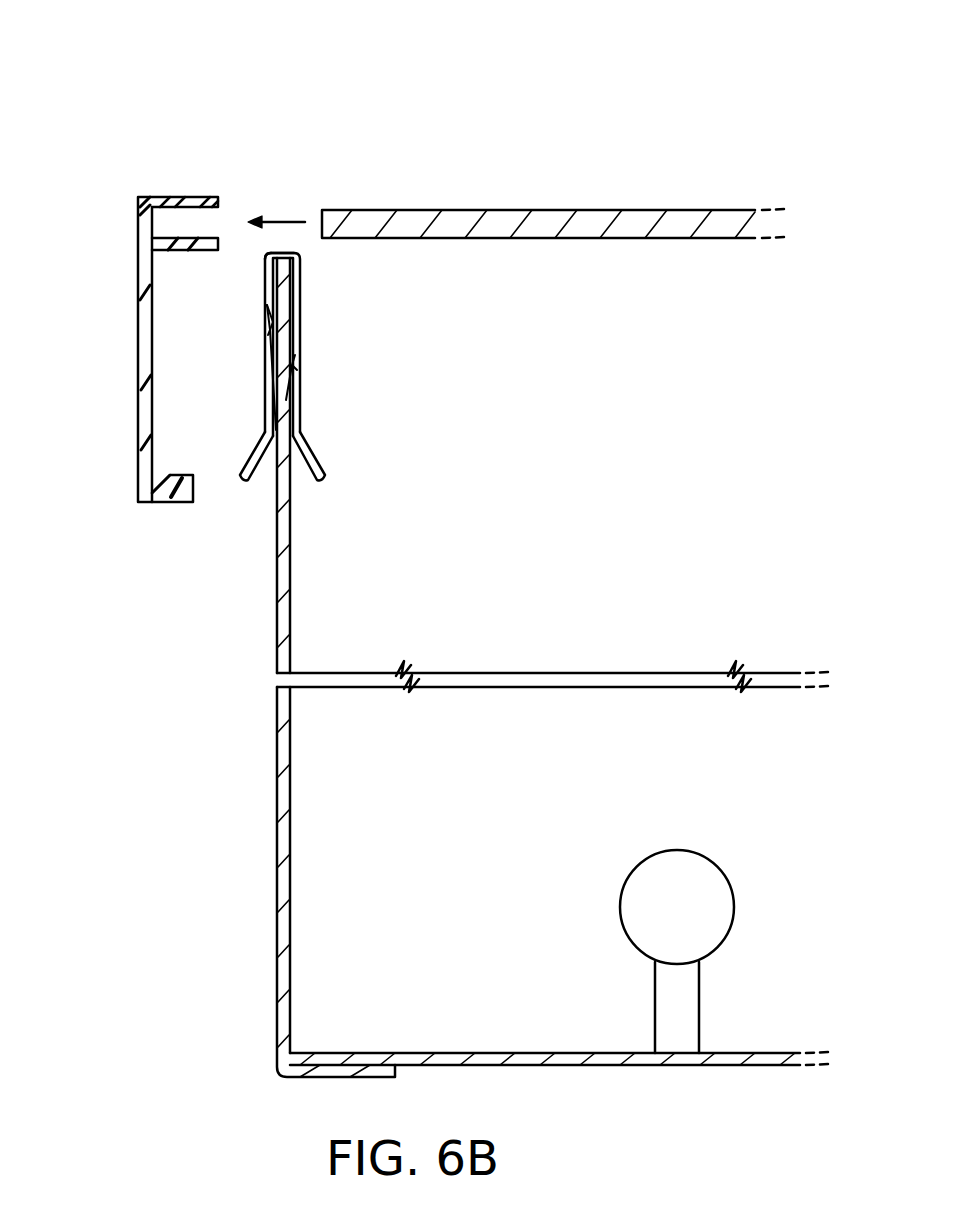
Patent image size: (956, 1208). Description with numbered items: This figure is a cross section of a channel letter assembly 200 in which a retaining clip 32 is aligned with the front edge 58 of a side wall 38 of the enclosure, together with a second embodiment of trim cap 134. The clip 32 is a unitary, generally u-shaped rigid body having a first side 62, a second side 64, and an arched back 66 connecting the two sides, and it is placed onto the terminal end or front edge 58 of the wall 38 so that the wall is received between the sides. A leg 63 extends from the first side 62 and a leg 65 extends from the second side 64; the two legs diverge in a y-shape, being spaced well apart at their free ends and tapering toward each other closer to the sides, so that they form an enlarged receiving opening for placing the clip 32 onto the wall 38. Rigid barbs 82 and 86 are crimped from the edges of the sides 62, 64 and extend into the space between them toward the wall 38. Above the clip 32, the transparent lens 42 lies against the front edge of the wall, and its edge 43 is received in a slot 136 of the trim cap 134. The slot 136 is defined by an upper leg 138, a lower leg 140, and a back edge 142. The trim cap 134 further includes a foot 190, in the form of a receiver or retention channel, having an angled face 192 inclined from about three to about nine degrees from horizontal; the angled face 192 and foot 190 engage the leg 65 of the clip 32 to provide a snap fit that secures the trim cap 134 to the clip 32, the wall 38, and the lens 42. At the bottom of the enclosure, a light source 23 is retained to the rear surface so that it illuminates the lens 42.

The channel letter assembly 200 is at (161, 297).
The trim cap 134 is at (130, 242).
The slot 136 is at (224, 207).
The upper leg 138 is at (193, 197).
The lower leg 140 is at (168, 249).
The back edge 142 is at (168, 197).
The foot 190 is at (166, 502).
The angled face 192 is at (176, 477).
The lens 42 is at (570, 220).
The edge 43 is at (320, 222).
The arched back 66 is at (291, 253).
The front edge 58 is at (275, 250).
The retaining clip 32 is at (302, 322).
The first side 62 is at (299, 320).
The rigid barb 86 is at (270, 318).
The second side 64 is at (270, 385).
The rigid barb 82 is at (295, 375).
The leg 65 is at (256, 450).
The leg 63 is at (318, 456).
The wall 38 is at (277, 826).
The light source 23 is at (713, 862).